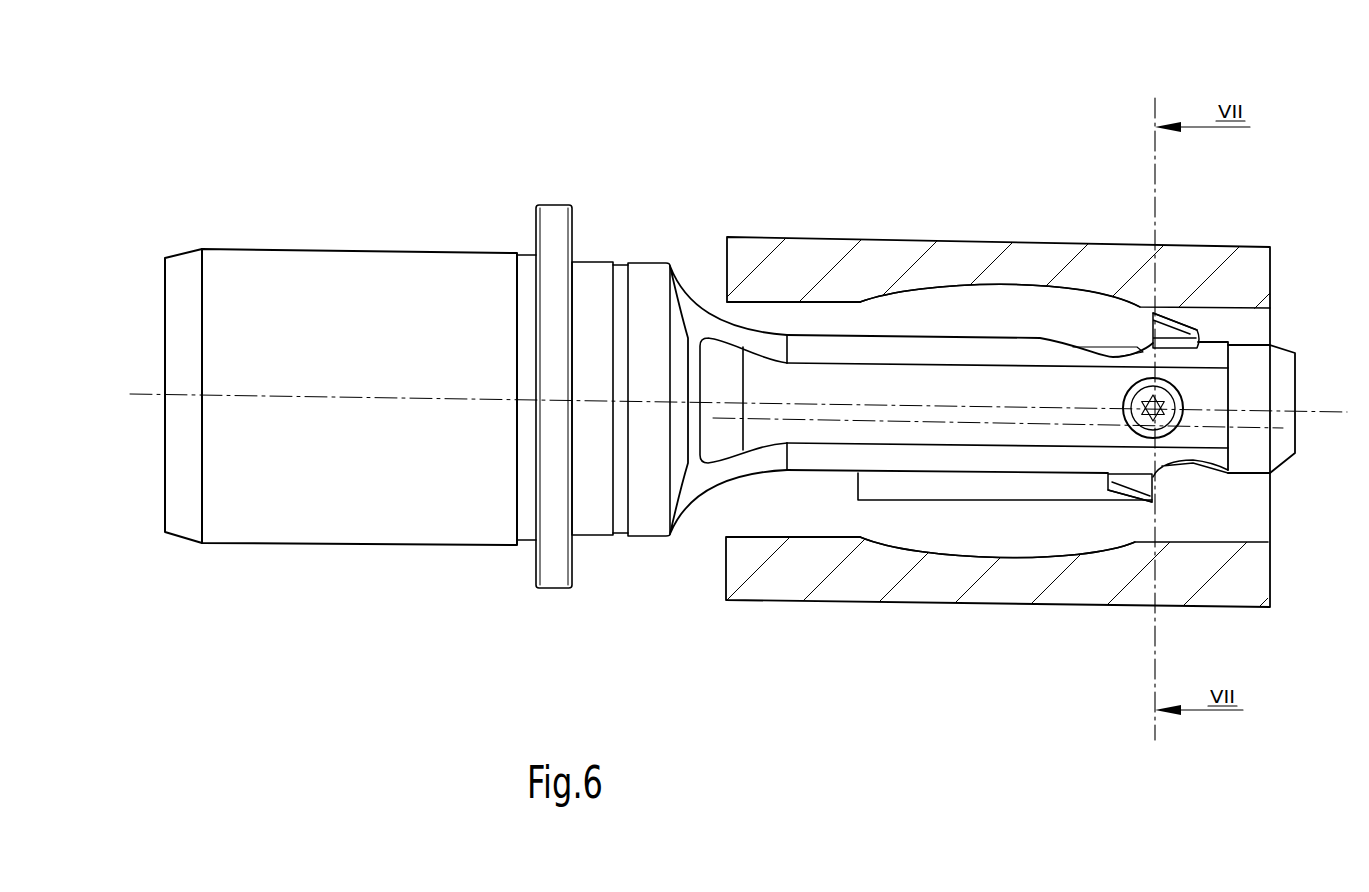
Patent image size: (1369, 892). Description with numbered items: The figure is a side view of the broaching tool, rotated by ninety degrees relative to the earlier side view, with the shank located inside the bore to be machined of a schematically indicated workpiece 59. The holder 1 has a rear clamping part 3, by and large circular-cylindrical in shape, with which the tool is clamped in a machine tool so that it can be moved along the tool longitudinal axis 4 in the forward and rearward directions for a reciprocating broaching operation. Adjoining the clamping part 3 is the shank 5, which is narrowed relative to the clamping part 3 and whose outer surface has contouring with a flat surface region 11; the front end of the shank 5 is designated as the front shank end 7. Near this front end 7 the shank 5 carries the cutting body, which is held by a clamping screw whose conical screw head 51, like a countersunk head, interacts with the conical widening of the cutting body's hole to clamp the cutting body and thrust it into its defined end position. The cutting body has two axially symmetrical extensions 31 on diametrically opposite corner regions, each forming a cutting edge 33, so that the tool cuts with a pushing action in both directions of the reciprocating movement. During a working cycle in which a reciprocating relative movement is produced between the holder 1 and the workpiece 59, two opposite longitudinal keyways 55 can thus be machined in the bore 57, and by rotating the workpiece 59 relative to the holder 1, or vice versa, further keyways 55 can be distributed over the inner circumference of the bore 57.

The holder 1 is at (497, 162).
The clamping part 3 is at (323, 277).
The tool longitudinal axis 4 is at (153, 393).
The shank 5 is at (807, 470).
The front shank end 7 is at (1297, 380).
The flat surface region 11 is at (845, 318).
The extension 31 is at (1187, 322).
The cutting edge 33 is at (1156, 308).
The screw head 51 is at (1190, 420).
The longitudinal keyway 55 is at (936, 287).
The bore 57 is at (765, 302).
The workpiece 59 is at (1107, 262).